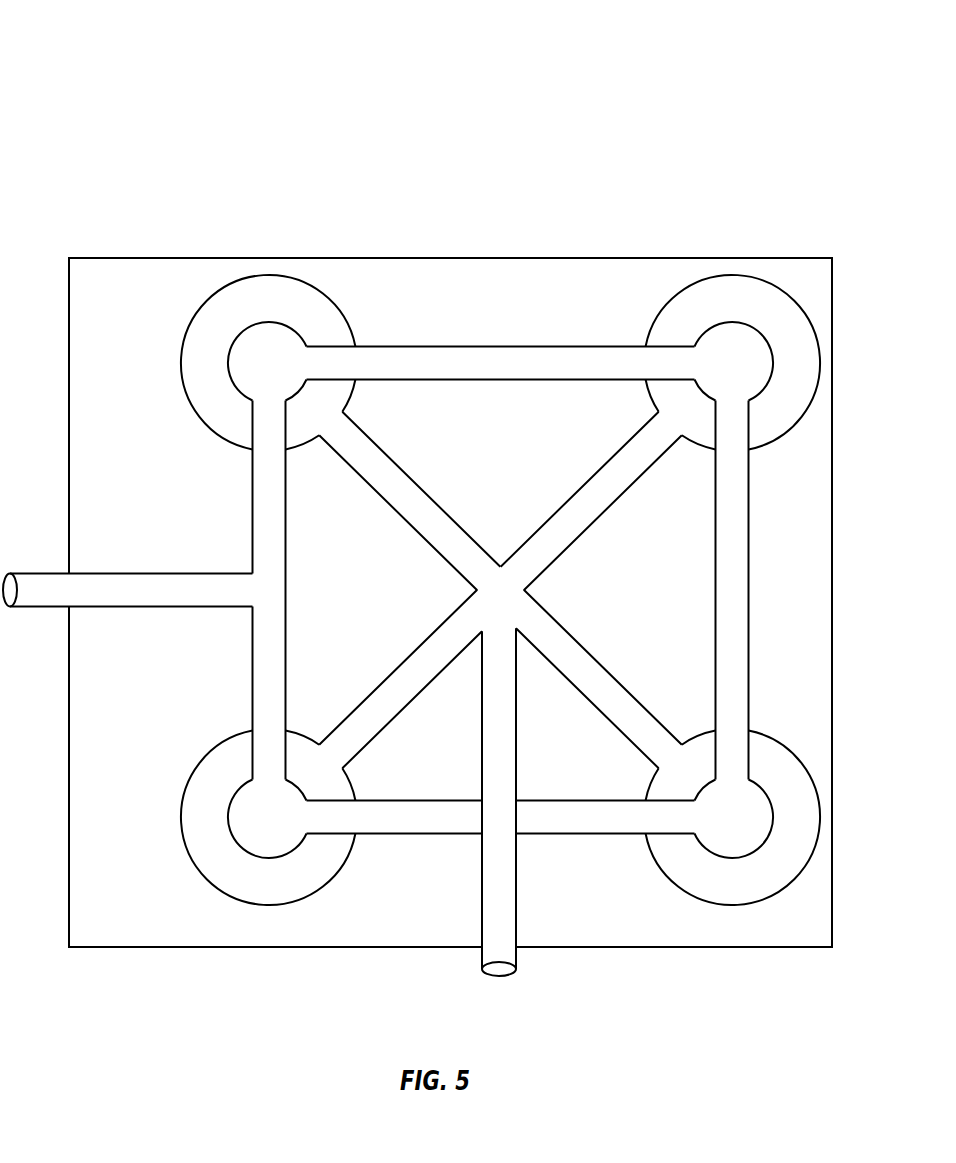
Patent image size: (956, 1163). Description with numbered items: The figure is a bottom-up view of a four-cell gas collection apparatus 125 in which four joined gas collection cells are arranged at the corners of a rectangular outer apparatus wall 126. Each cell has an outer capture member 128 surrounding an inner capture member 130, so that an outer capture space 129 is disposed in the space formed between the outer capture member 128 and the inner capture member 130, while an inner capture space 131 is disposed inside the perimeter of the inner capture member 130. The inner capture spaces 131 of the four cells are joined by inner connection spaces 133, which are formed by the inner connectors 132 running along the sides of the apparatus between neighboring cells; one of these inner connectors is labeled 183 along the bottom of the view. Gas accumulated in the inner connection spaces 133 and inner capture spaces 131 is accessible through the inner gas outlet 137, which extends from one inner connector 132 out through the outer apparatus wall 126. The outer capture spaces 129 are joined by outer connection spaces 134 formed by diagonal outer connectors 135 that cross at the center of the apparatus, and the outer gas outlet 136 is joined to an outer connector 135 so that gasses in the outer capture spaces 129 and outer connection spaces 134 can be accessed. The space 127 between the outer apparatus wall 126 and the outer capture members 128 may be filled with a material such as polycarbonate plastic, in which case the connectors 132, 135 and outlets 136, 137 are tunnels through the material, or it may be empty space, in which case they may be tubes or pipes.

The microfluidic device 125 is at (174, 92).
The outer apparatus wall 126 is at (240, 258).
The space 127 is at (177, 283).
The outer capture member 128 is at (327, 292).
The outer capture space 129 is at (192, 346).
The inner capture member 130 is at (262, 321).
The inner capture space 131 is at (291, 377).
The inner connector 132 is at (460, 340).
The inner connection space 133 is at (375, 350).
The outer connection space 134 is at (401, 479).
The outer connector 135 is at (560, 621).
The outer gas outlet 136 is at (478, 953).
The inner gas outlet 137 is at (62, 573).
The bottom channel 183 is at (490, 829).